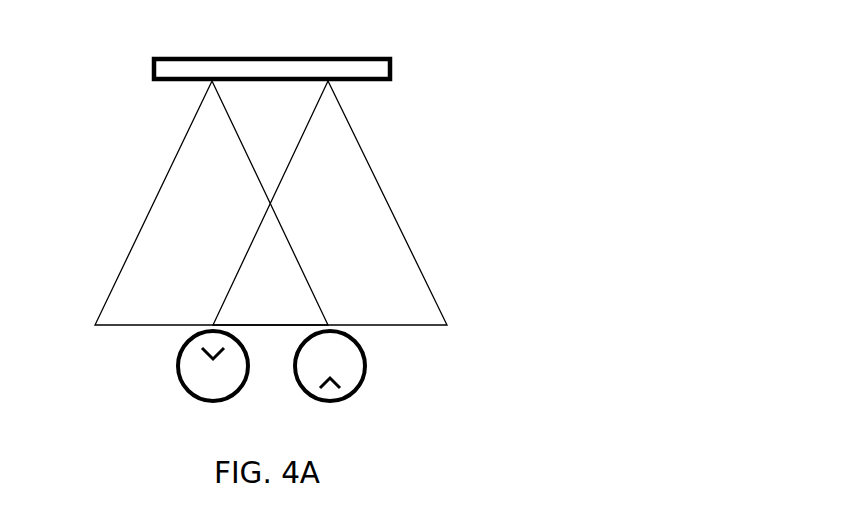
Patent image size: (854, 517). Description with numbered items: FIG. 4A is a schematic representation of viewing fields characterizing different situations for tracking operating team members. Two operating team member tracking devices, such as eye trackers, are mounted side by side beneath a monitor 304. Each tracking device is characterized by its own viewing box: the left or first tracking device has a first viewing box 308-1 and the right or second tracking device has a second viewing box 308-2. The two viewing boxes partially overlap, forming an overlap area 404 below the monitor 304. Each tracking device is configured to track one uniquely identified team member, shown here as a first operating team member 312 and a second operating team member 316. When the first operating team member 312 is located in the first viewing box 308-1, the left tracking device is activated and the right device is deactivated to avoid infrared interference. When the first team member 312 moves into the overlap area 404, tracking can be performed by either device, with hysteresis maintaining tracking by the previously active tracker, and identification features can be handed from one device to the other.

The monitor 304 is at (392, 75).
The first viewing box 308-1 is at (160, 218).
The second viewing box 308-2 is at (373, 222).
The overlap area 404 is at (295, 298).
The first operating team member 312 is at (183, 385).
The second operating team member 316 is at (363, 378).